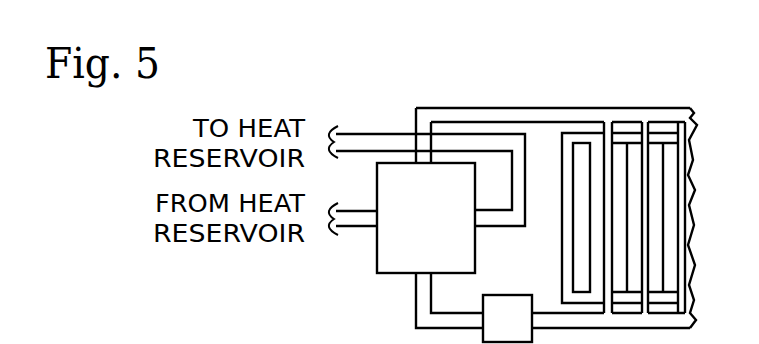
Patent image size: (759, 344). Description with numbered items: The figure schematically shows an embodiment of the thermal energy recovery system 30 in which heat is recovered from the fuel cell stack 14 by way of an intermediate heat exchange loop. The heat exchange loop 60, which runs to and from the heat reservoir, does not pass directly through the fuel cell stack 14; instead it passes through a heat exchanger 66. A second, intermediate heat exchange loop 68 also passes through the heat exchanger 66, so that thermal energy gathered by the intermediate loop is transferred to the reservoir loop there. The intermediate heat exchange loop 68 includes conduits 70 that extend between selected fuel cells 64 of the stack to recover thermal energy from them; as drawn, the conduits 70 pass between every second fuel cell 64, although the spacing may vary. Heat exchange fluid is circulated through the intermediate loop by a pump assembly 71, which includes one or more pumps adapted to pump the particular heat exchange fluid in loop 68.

The fuel cell stack 14 is at (706, 127).
The thermal energy recovery system 30 is at (402, 95).
The heat exchange loop 60 is at (392, 132).
The fuel cells 64 is at (578, 278).
The heat exchanger 66 is at (440, 229).
The intermediate heat exchange loop 68 is at (558, 105).
The conduits 70 is at (608, 177).
The pump assembly 71 is at (521, 331).